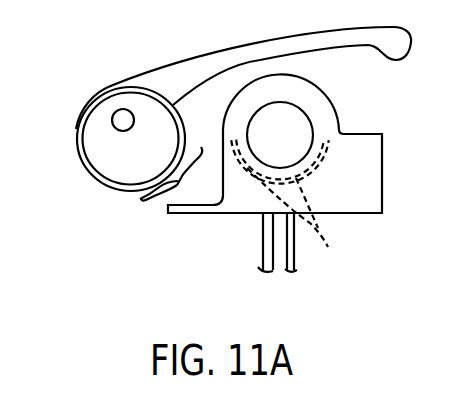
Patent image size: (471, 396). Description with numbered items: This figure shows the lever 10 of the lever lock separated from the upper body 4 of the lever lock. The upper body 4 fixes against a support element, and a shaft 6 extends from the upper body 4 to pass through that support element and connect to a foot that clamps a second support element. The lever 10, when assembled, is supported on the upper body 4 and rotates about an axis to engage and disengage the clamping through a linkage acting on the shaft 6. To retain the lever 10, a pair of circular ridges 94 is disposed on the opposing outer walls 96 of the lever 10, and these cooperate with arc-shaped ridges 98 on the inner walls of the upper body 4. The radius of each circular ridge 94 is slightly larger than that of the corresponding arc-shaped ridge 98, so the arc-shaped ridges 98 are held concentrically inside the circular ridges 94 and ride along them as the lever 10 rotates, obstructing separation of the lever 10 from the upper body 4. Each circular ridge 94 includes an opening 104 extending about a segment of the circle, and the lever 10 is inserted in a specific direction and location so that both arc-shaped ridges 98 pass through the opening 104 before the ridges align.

The upper body 4 is at (362, 171).
The shaft 6 is at (263, 245).
The lever 10 is at (212, 54).
The circular ridges 94 is at (83, 158).
The outer walls 96 is at (110, 158).
The arc-shaped ridges 98 is at (283, 207).
The opening 104 is at (178, 183).